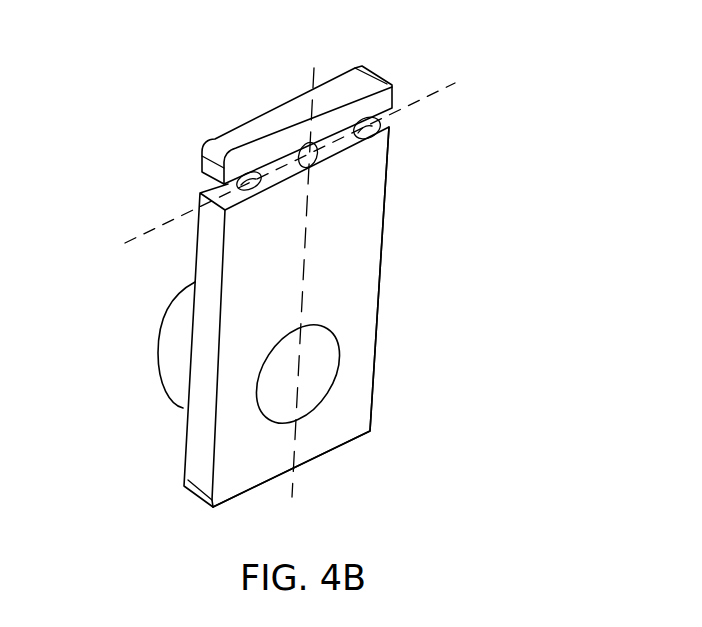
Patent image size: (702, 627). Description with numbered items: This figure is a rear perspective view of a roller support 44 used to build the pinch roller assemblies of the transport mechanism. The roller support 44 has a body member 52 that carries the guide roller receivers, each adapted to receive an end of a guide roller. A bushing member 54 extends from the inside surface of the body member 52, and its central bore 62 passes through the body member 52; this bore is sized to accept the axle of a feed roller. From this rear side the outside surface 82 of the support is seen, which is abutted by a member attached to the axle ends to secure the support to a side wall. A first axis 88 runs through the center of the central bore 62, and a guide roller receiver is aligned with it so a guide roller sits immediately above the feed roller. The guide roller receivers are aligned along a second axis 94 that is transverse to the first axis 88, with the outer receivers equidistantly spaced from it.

The roller support 44 is at (252, 92).
The body member 52 is at (377, 268).
The bushing member 54 is at (168, 353).
The central bore 62 is at (315, 363).
The outside surface 82 is at (360, 418).
The first axis 88 is at (307, 217).
The second axis 94 is at (425, 96).